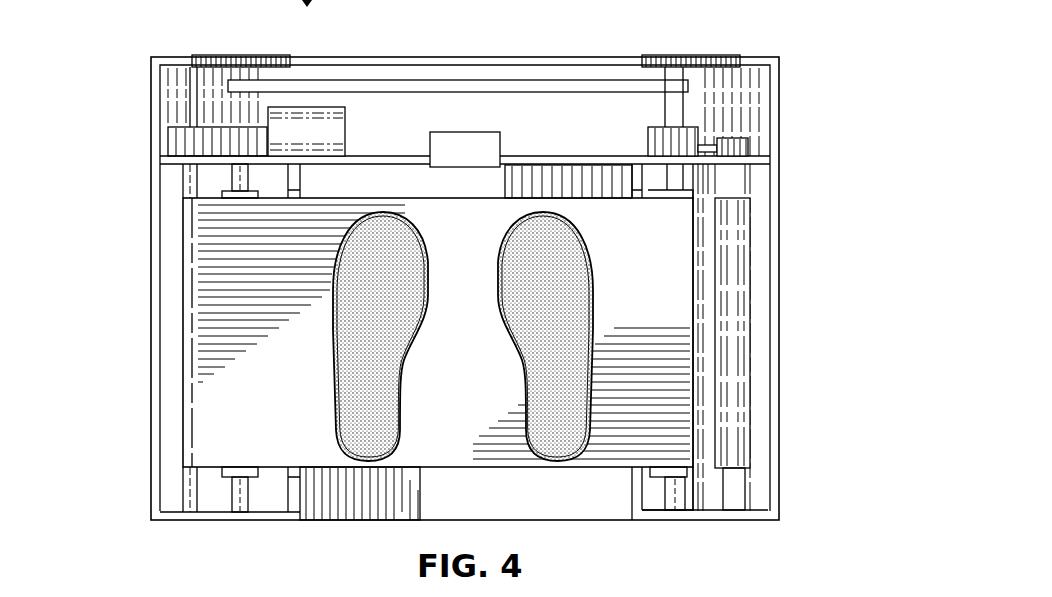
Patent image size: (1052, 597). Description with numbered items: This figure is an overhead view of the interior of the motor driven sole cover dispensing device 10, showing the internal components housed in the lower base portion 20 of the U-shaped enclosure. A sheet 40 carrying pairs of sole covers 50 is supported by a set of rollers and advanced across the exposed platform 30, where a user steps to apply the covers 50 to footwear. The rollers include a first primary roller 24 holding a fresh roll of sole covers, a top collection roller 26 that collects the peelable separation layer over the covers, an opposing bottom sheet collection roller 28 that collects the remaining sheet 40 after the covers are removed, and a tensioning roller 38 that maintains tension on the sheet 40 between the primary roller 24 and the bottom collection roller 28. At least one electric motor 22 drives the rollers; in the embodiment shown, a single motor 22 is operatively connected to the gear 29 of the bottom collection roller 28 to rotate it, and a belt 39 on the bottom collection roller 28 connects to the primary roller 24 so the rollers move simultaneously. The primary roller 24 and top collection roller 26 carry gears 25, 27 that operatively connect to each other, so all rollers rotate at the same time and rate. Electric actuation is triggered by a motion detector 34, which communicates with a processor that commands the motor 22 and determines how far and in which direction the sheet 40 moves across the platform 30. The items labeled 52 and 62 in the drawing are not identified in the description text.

The dispensing device 10 is at (433, 288).
The lower base portion 20 is at (780, 305).
The electric motor 22 is at (302, 128).
The primary roller 24 is at (673, 493).
The gear 25 is at (677, 138).
The top collection roller 26 is at (735, 488).
The gear 27 is at (732, 147).
The bottom sheet collection roller 28 is at (240, 497).
The gear 29 is at (190, 142).
The platform 30 is at (400, 482).
The motion detector 34 is at (460, 145).
The tensioning roller 38 is at (190, 495).
The belt 39 is at (555, 86).
The sheet 40 is at (325, 452).
The sole covers 50 is at (555, 443).
The direction arrow 52 is at (369, 5).
The top vent 62 is at (695, 55).